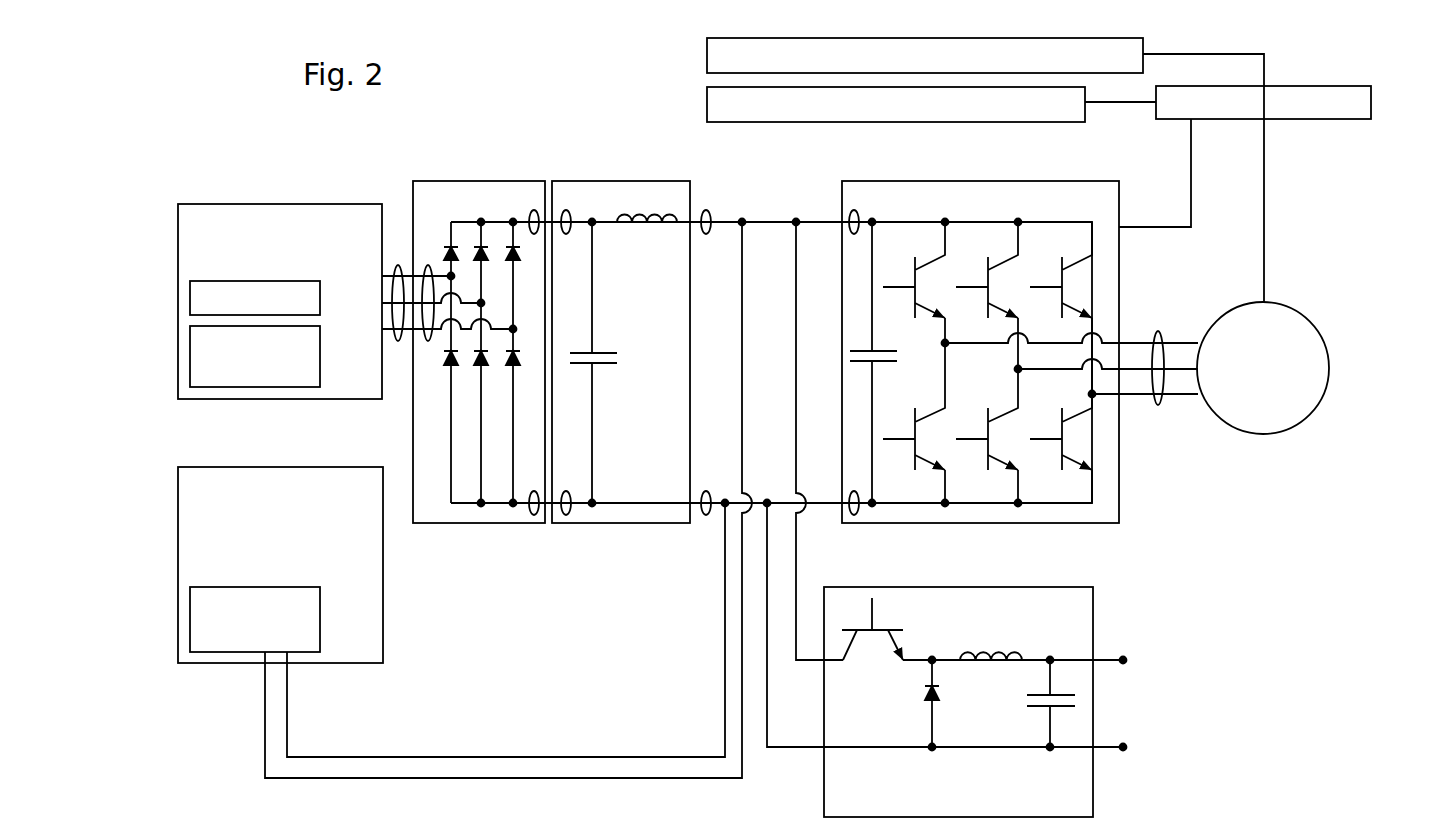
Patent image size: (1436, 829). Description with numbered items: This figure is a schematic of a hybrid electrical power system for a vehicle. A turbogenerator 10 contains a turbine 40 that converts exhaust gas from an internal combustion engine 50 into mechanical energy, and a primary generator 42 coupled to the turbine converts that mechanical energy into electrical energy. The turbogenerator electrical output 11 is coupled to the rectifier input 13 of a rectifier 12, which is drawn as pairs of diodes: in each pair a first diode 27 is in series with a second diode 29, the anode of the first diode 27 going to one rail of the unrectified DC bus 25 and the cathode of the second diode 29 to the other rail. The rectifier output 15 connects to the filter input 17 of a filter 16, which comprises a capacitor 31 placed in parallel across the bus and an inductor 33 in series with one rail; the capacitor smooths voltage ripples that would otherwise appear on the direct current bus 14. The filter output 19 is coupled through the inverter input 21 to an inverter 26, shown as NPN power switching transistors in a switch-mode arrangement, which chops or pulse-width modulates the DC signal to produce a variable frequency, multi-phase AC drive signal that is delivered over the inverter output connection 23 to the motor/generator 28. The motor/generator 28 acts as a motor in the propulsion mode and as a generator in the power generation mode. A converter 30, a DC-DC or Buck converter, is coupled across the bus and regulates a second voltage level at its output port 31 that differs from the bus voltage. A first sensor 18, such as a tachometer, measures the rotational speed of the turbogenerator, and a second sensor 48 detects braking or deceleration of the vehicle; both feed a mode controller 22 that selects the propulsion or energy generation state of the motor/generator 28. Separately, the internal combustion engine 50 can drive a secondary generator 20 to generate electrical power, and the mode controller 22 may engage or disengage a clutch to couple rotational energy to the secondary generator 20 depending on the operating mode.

The turbogenerator 10 is at (322, 204).
The turbogenerator electrical output 11 is at (398, 262).
The rectifier 12 is at (483, 181).
The rectifier input 13 is at (446, 366).
The direct current bus 14 is at (796, 222).
The rectifier output 15 is at (537, 210).
The filter 16 is at (578, 181).
The filter input 17 is at (565, 210).
The first sensor 18 is at (707, 103).
The filter output 19 is at (707, 210).
The secondary generator 20 is at (320, 620).
The inverter input 21 is at (850, 216).
The mode controller 22 is at (1372, 102).
The inverter output connection 23 is at (1162, 404).
The unrectified DC bus 25 is at (458, 222).
The inverter 26 is at (1120, 309).
The first diode 27 is at (468, 372).
The motor/generator 28 is at (1222, 424).
The second diode 29 is at (444, 253).
The converter 30 is at (824, 785).
The capacitor 31 is at (608, 352).
The inductor 33 is at (643, 228).
The turbine 40 is at (320, 304).
The primary generator 42 is at (320, 372).
The second sensor 48 is at (707, 55).
The internal combustion engine 50 is at (332, 665).